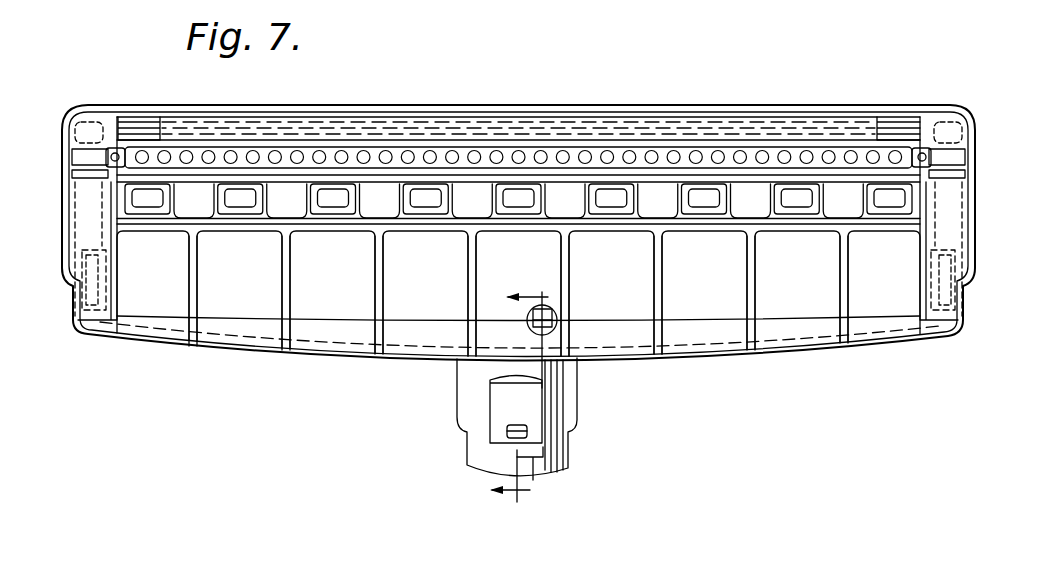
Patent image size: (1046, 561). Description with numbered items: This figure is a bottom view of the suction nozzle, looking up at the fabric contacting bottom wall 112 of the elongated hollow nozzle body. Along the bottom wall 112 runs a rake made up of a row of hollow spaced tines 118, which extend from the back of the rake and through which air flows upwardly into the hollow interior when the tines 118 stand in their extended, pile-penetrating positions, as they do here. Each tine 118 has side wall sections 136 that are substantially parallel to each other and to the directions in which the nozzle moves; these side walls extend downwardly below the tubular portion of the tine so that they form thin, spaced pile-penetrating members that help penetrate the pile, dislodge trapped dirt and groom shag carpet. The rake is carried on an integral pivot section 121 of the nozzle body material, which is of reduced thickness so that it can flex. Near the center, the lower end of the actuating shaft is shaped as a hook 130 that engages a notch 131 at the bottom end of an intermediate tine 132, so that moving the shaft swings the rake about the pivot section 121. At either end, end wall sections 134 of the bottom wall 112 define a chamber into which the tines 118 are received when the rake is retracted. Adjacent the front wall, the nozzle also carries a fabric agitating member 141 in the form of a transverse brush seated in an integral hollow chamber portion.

The bottom wall 112 is at (653, 118).
The tines 118 is at (413, 199).
The integral pivot section 121 is at (262, 226).
The hook 130 is at (557, 322).
The notch 131 is at (547, 198).
The intermediate tine 132 is at (497, 197).
The end wall sections 134 is at (117, 296).
The side wall sections 136 is at (723, 202).
The fabric agitating member 141 is at (375, 153).